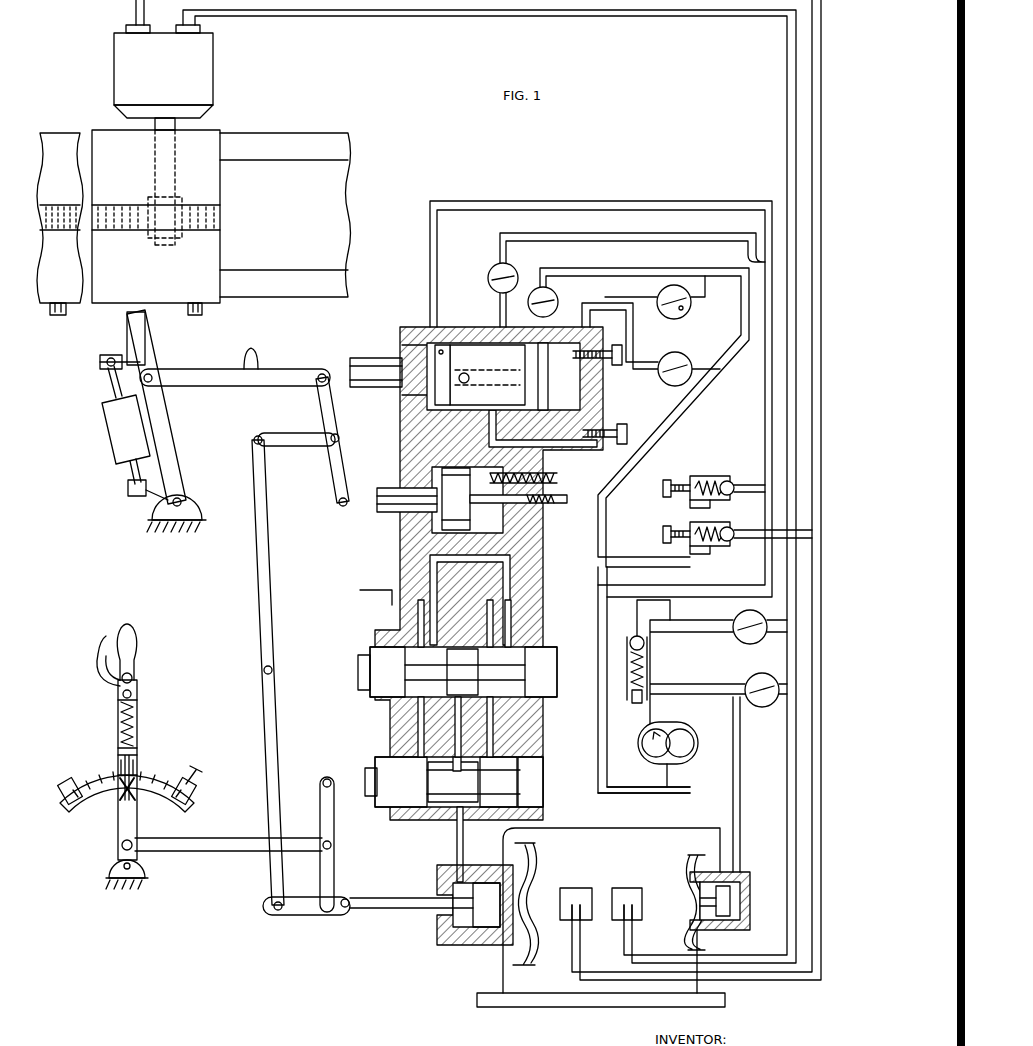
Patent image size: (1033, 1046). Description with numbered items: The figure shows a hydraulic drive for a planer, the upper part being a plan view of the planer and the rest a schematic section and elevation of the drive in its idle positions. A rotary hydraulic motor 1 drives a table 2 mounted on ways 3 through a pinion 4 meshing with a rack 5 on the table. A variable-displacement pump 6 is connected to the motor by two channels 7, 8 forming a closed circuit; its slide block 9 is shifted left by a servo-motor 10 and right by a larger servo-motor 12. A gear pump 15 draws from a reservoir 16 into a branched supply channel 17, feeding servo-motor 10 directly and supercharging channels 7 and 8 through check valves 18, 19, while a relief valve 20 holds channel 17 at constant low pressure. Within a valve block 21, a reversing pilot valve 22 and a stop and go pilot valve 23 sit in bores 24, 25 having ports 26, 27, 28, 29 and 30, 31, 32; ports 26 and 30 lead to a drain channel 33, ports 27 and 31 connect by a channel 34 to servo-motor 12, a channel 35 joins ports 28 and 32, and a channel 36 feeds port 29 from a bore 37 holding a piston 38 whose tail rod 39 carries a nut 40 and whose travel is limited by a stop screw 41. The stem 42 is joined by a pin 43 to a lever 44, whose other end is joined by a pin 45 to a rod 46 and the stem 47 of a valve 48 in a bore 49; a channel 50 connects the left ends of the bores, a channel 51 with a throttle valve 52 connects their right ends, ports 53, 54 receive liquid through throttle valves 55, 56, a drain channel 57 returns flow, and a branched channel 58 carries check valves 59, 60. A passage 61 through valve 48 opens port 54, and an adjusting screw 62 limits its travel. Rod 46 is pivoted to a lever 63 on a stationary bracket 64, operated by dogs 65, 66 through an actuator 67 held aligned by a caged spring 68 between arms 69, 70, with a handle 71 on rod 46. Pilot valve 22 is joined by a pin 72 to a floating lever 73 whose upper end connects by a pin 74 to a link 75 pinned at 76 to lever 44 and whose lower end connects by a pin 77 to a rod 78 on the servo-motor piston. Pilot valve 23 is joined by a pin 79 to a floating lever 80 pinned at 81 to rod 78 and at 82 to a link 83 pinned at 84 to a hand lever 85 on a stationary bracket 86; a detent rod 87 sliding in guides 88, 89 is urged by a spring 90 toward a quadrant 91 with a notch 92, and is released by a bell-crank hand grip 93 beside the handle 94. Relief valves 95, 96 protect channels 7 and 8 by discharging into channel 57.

The rotary hydraulic motor 1 is at (166, 66).
The table 2 is at (145, 284).
The ways 3 is at (298, 150).
The pinion 4 is at (153, 200).
The rack 5 is at (140, 218).
The pump 6 is at (611, 864).
The channel 7 is at (574, 946).
The channel 8 is at (300, 14).
The slide block 9 is at (536, 886).
The servo-motor 10 is at (746, 906).
The servo-motor 12 is at (468, 946).
The gear pump 15 is at (645, 730).
The reservoir 16 is at (650, 790).
The supply channel 17 is at (430, 232).
The check valve 18 is at (736, 618).
The check valve 19 is at (748, 682).
The relief valve 20 is at (632, 640).
The valve block 21 is at (543, 573).
The reversing pilot valve 22 is at (388, 670).
The stop and go pilot valve 23 is at (388, 760).
The bore 24 is at (545, 655).
The bore 25 is at (530, 766).
The port 26 is at (422, 646).
The port 27 is at (440, 640).
The port 28 is at (490, 646).
The port 29 is at (510, 646).
The port 30 is at (418, 758).
The port 31 is at (456, 770).
The port 32 is at (484, 768).
The drain channel 33 is at (392, 592).
The channel 34 is at (457, 856).
The channel 35 is at (484, 736).
The channel 36 is at (432, 558).
The bore 37 is at (432, 472).
The piston 38 is at (458, 495).
The tail rod 39 is at (500, 504).
The nut 40 is at (552, 506).
The stop screw 41 is at (557, 480).
The stem 42 is at (396, 512).
The pin 43 is at (339, 502).
The lever 44 is at (334, 470).
The pin 45 is at (322, 372).
The rod 46 is at (210, 370).
The stem 47 is at (390, 360).
The valve 48 is at (500, 362).
The bore 49 is at (442, 340).
The channel 50 is at (430, 438).
The channel 51 is at (556, 448).
The throttle valve 52 is at (606, 430).
The port 53 is at (548, 402).
The port 54 is at (486, 340).
The throttle valve 55 is at (558, 297).
The throttle valve 56 is at (488, 278).
The drain channel 57 is at (574, 236).
The branched channel 58 is at (628, 340).
The check valve 59 is at (684, 312).
The check valve 60 is at (684, 360).
The passage 61 is at (506, 382).
The adjusting screw 62 is at (614, 368).
The lever 63 is at (158, 418).
The stationary bracket 64 is at (192, 506).
The dog 65 is at (56, 315).
The dog 66 is at (200, 315).
The actuator 67 is at (140, 333).
The caged spring 68 is at (120, 428).
The arm 69 is at (100, 362).
The arm 70 is at (128, 490).
The handle 71 is at (252, 344).
The pin 72 is at (264, 668).
The floating lever 73 is at (262, 580).
The pin 74 is at (254, 443).
The link 75 is at (302, 438).
The pin 76 is at (339, 436).
The pin 77 is at (262, 908).
The rod 78 is at (408, 900).
The pin 79 is at (326, 778).
The floating lever 80 is at (334, 818).
The pin 81 is at (347, 910).
The pin 82 is at (331, 848).
The link 83 is at (238, 848).
The pin 84 is at (120, 848).
The hand lever 85 is at (124, 826).
The stationary bracket 86 is at (108, 880).
The detent rod 87 is at (137, 752).
The guide 88 is at (118, 710).
The guide 89 is at (118, 766).
The spring 90 is at (134, 716).
The quadrant 91 is at (72, 796).
The notch 92 is at (140, 798).
The bell-crank hand grip 93 is at (100, 668).
The handle 94 is at (136, 644).
The high pressure relief valve 95 is at (728, 541).
The relief valve 96 is at (722, 482).